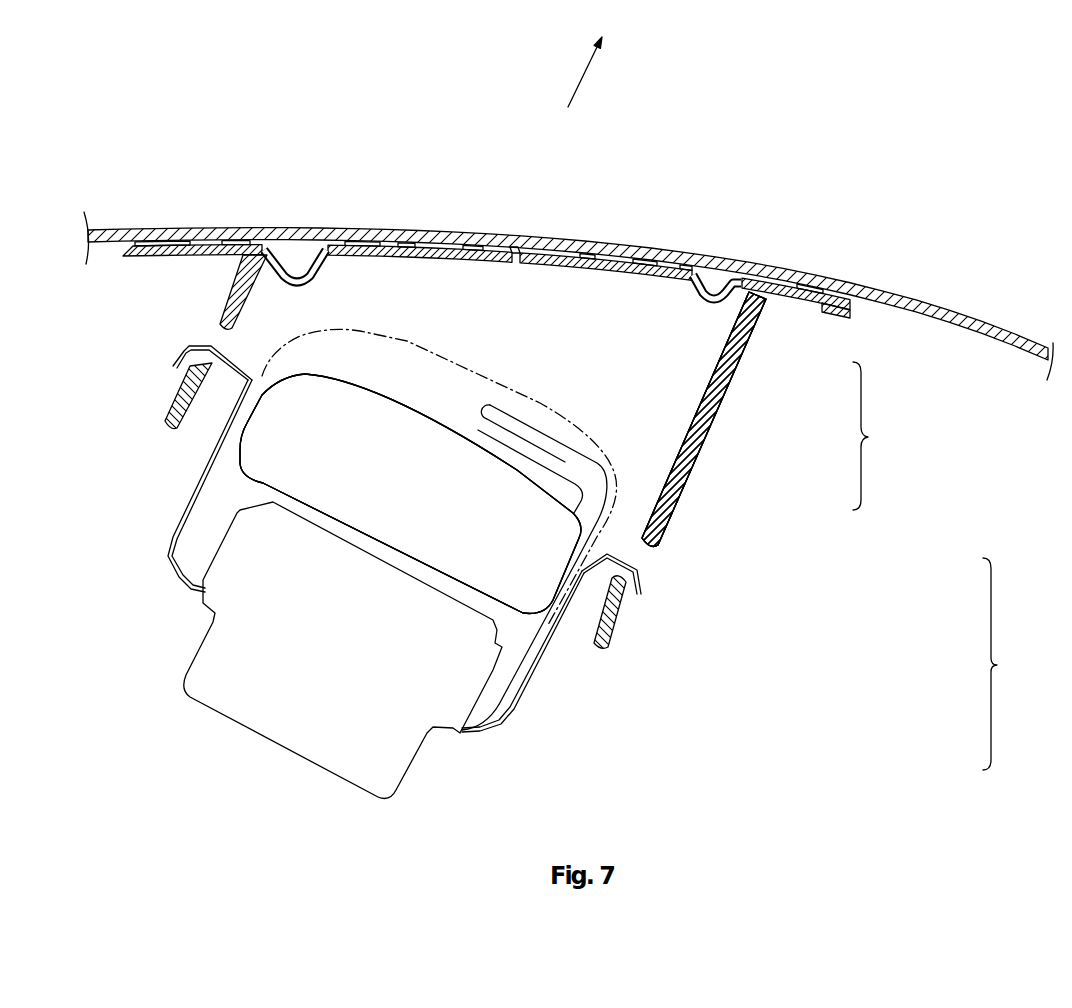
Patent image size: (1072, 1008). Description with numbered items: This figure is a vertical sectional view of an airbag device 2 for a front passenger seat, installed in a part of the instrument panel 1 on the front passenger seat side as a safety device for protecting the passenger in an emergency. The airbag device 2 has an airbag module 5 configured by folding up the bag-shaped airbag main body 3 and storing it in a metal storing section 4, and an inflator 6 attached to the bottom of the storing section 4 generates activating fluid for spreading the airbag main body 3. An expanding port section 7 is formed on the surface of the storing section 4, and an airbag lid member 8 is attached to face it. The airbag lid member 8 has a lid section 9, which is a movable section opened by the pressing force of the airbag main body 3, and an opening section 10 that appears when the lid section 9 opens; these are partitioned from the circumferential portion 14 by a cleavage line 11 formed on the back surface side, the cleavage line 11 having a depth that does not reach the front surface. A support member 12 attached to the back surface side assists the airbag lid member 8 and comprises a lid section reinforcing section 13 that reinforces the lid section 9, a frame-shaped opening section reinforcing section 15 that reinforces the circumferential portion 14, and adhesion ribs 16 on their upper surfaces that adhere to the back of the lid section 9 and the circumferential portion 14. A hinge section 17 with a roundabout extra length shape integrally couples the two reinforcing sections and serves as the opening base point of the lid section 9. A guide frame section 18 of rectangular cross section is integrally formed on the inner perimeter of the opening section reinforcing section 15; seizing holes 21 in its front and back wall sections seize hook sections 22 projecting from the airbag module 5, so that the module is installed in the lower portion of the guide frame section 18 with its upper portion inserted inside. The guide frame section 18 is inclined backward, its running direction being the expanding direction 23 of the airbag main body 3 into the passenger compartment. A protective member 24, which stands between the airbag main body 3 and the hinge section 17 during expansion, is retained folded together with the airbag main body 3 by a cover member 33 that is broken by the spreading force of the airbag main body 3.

The instrument panel 1 is at (948, 303).
The airbag device 2 is at (998, 664).
The airbag main body 3 is at (524, 616).
The storing section 4 is at (517, 713).
The airbag module 5 is at (645, 755).
The inflator 6 is at (412, 770).
The expanding port section 7 is at (520, 360).
The airbag lid member 8 is at (903, 336).
The lid section 9 is at (400, 245).
The opening section 10 is at (480, 226).
The cleavage line 11 is at (268, 247).
The support member 12 is at (878, 436).
The lid section reinforcing section 13 is at (728, 378).
The circumferential portion 14 is at (215, 244).
The opening section reinforcing section 15 is at (800, 305).
The adhesion rib 16 is at (152, 240).
The hinge section 17 is at (690, 292).
The guide frame section 18 is at (693, 468).
The seizing hole 21 is at (220, 328).
The hook section 22 is at (174, 366).
The expanding direction 23 is at (590, 76).
The protective member 24 is at (550, 435).
The cover member 33 is at (403, 340).